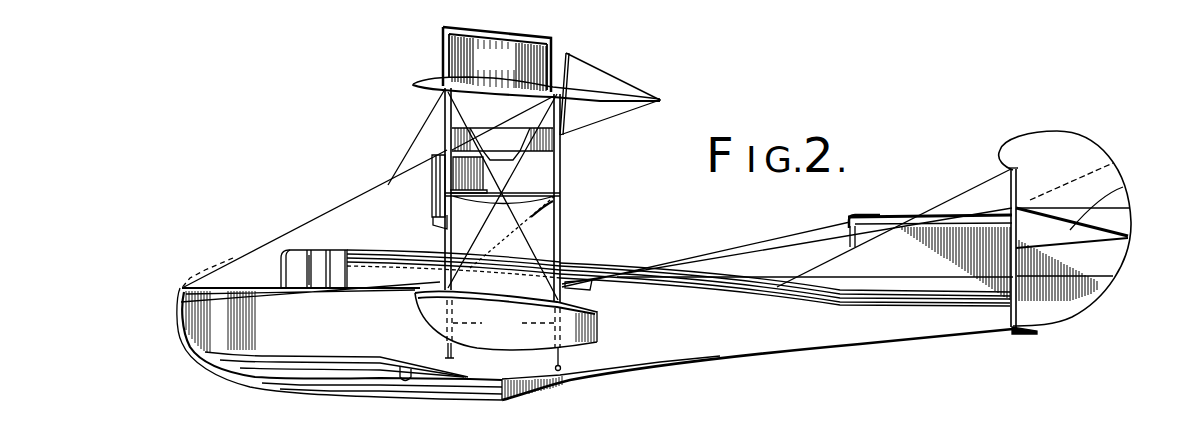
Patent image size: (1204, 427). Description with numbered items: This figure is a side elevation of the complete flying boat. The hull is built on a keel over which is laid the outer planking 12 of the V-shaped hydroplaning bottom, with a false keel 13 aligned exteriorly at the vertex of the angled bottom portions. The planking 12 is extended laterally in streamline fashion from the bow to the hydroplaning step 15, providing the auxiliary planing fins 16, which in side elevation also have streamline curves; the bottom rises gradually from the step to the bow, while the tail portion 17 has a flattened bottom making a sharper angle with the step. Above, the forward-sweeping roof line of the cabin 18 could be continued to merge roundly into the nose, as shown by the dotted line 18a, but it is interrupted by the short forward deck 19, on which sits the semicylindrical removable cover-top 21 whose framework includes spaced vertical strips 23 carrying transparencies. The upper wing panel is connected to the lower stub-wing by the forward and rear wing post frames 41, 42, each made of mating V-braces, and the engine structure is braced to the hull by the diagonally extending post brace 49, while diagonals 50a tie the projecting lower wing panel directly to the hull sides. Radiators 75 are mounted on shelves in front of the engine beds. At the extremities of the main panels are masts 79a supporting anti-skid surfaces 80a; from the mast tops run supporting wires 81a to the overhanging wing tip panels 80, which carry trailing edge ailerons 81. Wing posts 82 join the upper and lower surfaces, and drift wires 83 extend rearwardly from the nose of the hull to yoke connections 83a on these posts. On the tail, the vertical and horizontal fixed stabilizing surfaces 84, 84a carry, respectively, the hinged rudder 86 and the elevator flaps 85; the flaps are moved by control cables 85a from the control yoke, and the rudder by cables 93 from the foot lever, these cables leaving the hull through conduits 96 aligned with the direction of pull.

The outer planking 12 is at (443, 391).
The false keel 13 is at (373, 396).
The hydroplaning step 15 is at (521, 392).
The auxiliary planing fins 16 is at (409, 375).
The tail portion 17 is at (975, 249).
The cabin 18 is at (396, 262).
The dotted line 18a is at (245, 254).
The forward deck 19 is at (233, 287).
The removable cover-top 21 is at (303, 250).
The vertical strips 23 is at (308, 277).
The forward wing post frame 41 is at (443, 135).
The rear wing post frame 42 is at (560, 162).
The post brace 49 is at (565, 219).
The diagonals 50a is at (506, 330).
The radiators 75 is at (440, 192).
The masts 79a is at (440, 50).
The wing tip panels 80 is at (567, 53).
The anti-skid surfaces 80a is at (499, 63).
The trailing edge ailerons 81 is at (615, 108).
The supporting wires 81a is at (443, 72).
The wing posts 82 is at (562, 205).
The drift wires 83 is at (336, 211).
The yoke connections 83a is at (388, 185).
The vertical fixed stabilizing surface 84 is at (970, 191).
The horizontal fixed stabilizing surface 84a is at (903, 224).
The elevator flaps 85 is at (1123, 186).
The control cables 85a is at (768, 250).
The rudder 86 is at (1124, 222).
The cables 93 is at (843, 280).
The conduits 96 is at (585, 286).